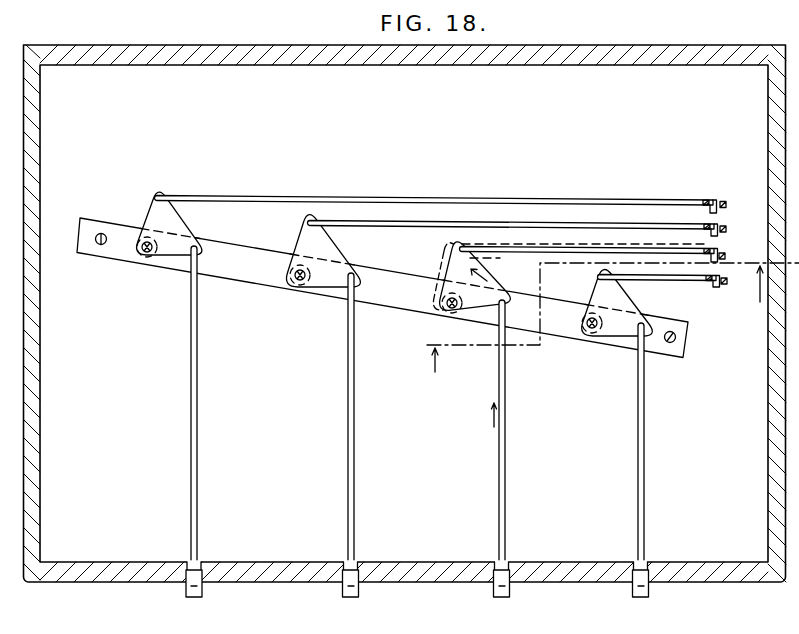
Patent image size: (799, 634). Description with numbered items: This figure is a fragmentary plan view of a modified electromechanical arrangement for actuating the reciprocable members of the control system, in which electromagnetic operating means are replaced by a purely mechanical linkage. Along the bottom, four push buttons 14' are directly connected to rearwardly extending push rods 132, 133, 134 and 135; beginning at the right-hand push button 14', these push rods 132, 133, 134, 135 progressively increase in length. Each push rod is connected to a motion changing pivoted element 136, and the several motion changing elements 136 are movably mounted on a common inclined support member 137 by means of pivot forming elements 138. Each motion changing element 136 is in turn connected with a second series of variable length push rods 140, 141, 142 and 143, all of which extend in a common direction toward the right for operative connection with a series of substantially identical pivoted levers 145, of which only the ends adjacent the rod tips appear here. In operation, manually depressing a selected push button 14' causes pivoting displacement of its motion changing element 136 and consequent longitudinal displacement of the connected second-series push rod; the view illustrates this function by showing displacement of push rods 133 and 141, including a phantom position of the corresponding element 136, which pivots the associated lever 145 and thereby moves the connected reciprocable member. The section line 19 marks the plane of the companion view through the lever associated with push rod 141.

The push button 14' is at (426, 593).
The section line 19- 19 is at (611, 337).
The push rod 132 is at (654, 439).
The push rod 133 is at (515, 435).
The push rod 134 is at (354, 443).
The push rod 135 is at (207, 416).
The motion changing pivoted element 136 is at (167, 257).
The support member 137 is at (112, 254).
The pivot forming element 138 is at (143, 258).
The push rod 140 is at (689, 279).
The push rod 141 is at (504, 252).
The push rod 142 is at (384, 228).
The push rod 143 is at (244, 201).
The pivoted lever 145 is at (723, 205).